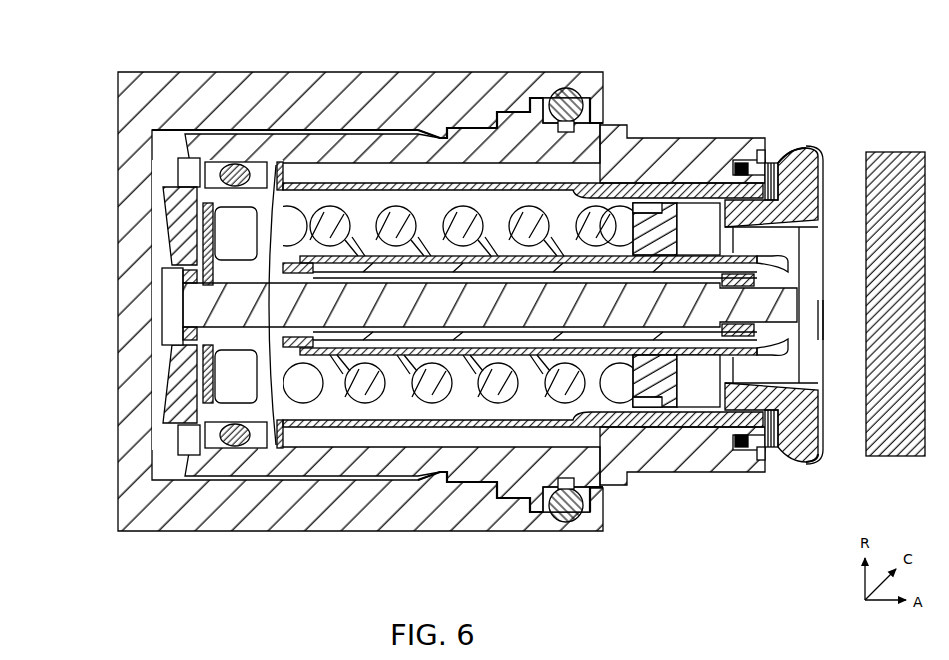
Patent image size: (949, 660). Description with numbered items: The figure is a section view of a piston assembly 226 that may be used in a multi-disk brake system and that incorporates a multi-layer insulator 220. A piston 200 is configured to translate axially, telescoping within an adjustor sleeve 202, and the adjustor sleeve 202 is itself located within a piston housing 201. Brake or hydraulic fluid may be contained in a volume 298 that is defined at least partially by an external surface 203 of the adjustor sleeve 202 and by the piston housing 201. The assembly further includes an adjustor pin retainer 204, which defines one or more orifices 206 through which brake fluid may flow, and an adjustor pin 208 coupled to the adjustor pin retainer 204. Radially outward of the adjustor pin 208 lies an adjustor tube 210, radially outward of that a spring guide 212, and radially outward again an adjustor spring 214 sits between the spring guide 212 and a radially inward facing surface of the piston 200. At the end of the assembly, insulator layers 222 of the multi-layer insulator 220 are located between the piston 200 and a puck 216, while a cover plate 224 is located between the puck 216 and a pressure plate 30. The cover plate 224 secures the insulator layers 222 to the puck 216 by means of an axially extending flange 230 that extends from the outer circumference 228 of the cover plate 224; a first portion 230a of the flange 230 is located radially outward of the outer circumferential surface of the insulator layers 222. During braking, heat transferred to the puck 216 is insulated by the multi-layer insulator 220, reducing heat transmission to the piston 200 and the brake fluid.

The pressure plate 30 is at (903, 163).
The piston 200 is at (638, 198).
The piston housing 201 is at (258, 92).
The adjustor sleeve 202 is at (378, 147).
The external surface 203 is at (313, 135).
The adjustor pin retainer 204 is at (164, 358).
The orifices 206 is at (171, 170).
The adjustor pin 208 is at (180, 295).
The adjustor tube 210 is at (697, 337).
The spring guide 212 is at (648, 377).
The adjustor spring 214 is at (613, 380).
The puck 216 is at (814, 451).
The multi-layer insulator 220 is at (756, 155).
The insulator layers 222 is at (768, 160).
The cover plate 224 is at (822, 318).
The piston assembly 226 is at (84, 73).
The outer circumference 228 is at (814, 148).
The axially extending flange 230 is at (808, 138).
The first portion 230a is at (777, 160).
The volume 298 is at (180, 133).